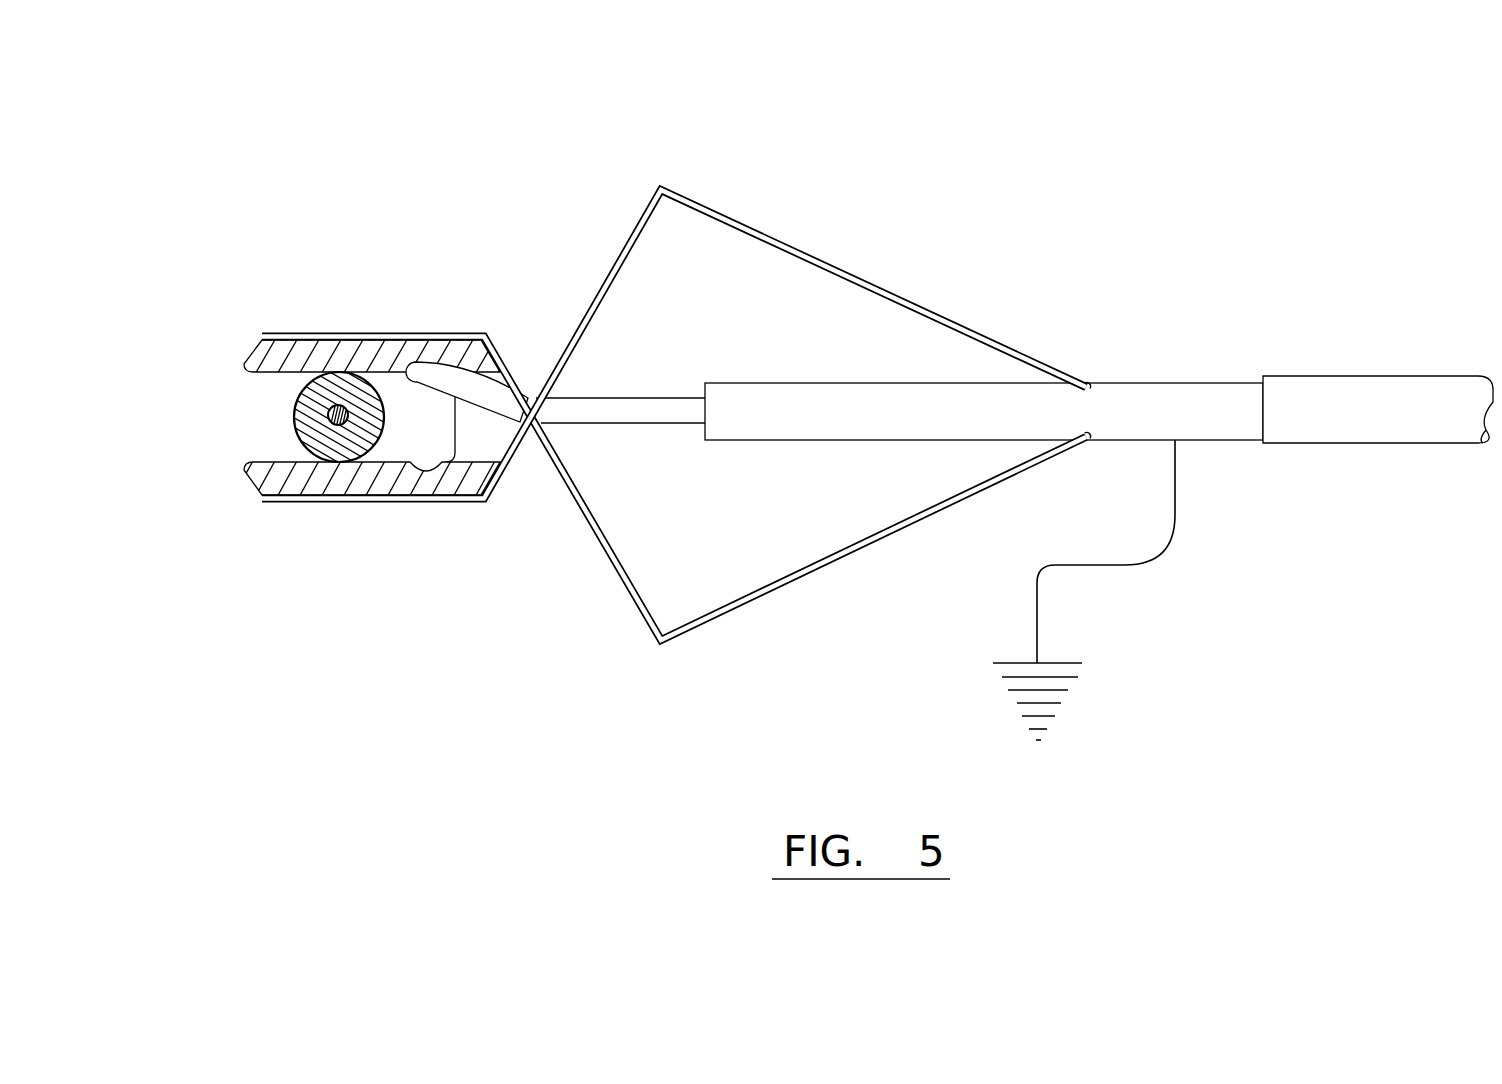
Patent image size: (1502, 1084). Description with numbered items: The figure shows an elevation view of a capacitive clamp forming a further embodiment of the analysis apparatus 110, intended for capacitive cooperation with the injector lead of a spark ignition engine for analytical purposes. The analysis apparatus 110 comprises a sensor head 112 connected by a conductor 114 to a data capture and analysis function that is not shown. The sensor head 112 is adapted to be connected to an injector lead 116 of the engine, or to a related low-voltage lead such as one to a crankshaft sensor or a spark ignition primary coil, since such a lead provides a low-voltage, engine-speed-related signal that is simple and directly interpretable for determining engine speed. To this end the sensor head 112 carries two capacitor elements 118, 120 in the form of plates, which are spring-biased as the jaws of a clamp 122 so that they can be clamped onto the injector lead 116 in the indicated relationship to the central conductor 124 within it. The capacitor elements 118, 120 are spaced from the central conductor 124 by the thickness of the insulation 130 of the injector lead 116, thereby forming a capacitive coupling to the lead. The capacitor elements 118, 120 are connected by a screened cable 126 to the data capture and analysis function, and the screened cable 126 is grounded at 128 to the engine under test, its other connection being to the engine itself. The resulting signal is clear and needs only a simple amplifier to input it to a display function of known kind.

The analysis apparatus 110 is at (810, 623).
The sensor head 112 is at (437, 515).
The conductor 114 is at (1177, 398).
The injector lead 116 is at (285, 412).
The capacitor element 118 is at (405, 348).
The capacitor element 120 is at (328, 483).
The clamp 122 is at (733, 213).
The central conductor 124 is at (333, 408).
The screened cable 126 is at (1395, 392).
The ground 128 is at (1163, 553).
The insulation 130 is at (353, 383).